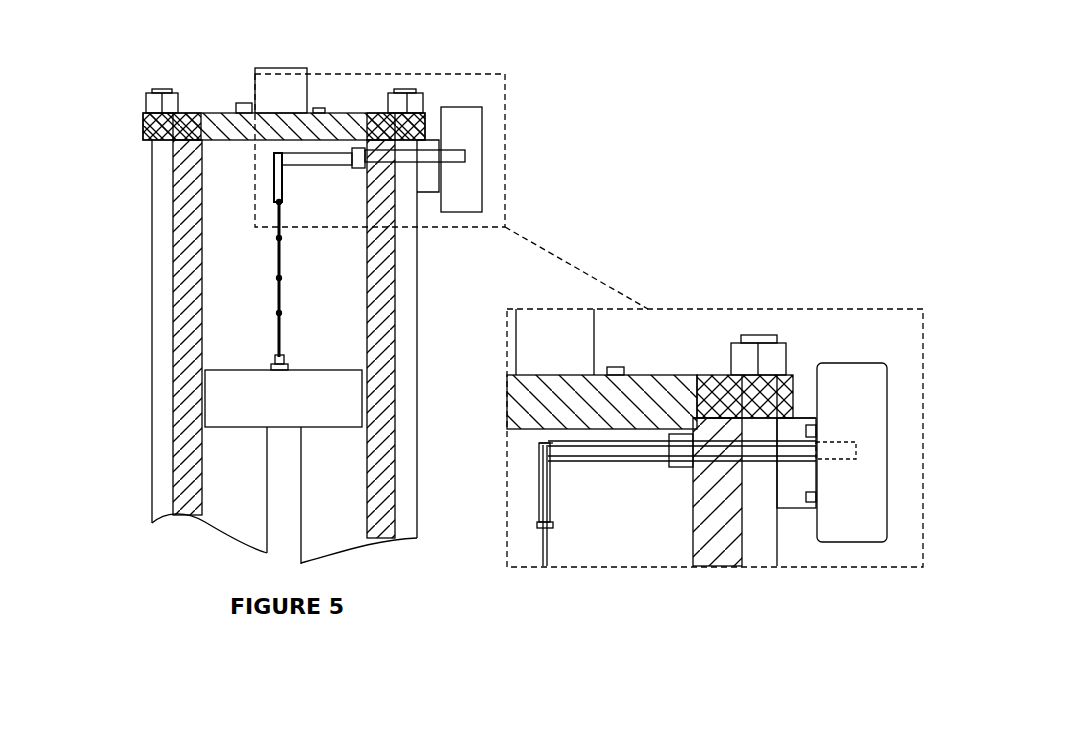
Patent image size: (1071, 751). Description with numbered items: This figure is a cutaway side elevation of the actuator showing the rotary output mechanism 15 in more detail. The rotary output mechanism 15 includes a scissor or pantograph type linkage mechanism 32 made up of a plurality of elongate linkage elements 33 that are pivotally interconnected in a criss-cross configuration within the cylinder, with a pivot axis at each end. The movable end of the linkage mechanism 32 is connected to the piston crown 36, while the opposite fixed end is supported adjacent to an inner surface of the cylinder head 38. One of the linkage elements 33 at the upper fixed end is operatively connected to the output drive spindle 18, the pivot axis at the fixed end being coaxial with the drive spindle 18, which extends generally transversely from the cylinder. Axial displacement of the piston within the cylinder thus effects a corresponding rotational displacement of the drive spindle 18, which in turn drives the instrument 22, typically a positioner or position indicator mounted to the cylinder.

The rotary output mechanism 15 is at (595, 479).
The output drive spindle 18 is at (414, 158).
The instrument 22 is at (473, 122).
The linkage mechanism 32 is at (250, 260).
The linkage elements 33 is at (280, 290).
The piston crown 36 is at (248, 392).
The cylinder head 38 is at (217, 120).